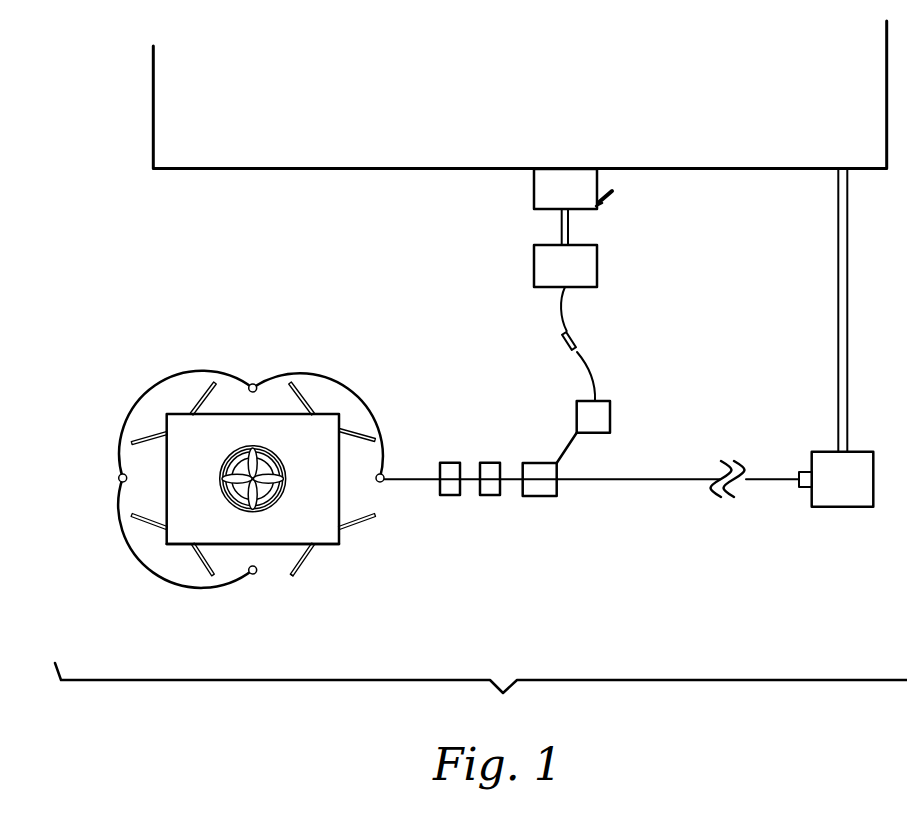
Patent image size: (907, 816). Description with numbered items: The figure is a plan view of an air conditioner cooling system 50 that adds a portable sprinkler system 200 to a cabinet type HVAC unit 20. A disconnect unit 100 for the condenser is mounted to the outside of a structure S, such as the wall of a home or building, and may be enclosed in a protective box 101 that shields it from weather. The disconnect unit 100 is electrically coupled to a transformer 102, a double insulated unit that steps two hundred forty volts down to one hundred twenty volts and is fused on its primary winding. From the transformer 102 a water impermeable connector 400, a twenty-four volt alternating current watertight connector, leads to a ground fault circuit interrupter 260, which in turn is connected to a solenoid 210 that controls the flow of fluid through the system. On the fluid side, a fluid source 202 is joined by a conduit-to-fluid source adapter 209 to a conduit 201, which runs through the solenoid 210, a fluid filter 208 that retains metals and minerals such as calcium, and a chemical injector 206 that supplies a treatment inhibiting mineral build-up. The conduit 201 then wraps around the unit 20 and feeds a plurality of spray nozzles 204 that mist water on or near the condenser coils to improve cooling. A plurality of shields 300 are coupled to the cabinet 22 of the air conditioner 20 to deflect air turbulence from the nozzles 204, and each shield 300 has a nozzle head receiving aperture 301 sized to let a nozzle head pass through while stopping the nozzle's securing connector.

The structure S is at (415, 170).
The disconnect unit 100 is at (534, 183).
The protective box 101 is at (534, 209).
The transformer 102 is at (597, 265).
The water impermeable connector 400 is at (577, 335).
The ground fault circuit interrupter 260 is at (610, 415).
The conduit 201 is at (360, 388).
The spray nozzles 204 is at (262, 383).
The HVAC unit 20 is at (185, 430).
The cabinet 22 is at (263, 543).
The air conditioner cooling system 50 is at (344, 548).
The shields 300 is at (312, 570).
The nozzle head receiving aperture 301 is at (293, 578).
The chemical injector 206 is at (450, 463).
The fluid filter 208 is at (490, 463).
The solenoid 210 is at (533, 496).
The conduit-to-fluid source adapter 209 is at (799, 488).
The fluid source 202 is at (843, 508).
The portable sprinkler system 200 is at (481, 690).